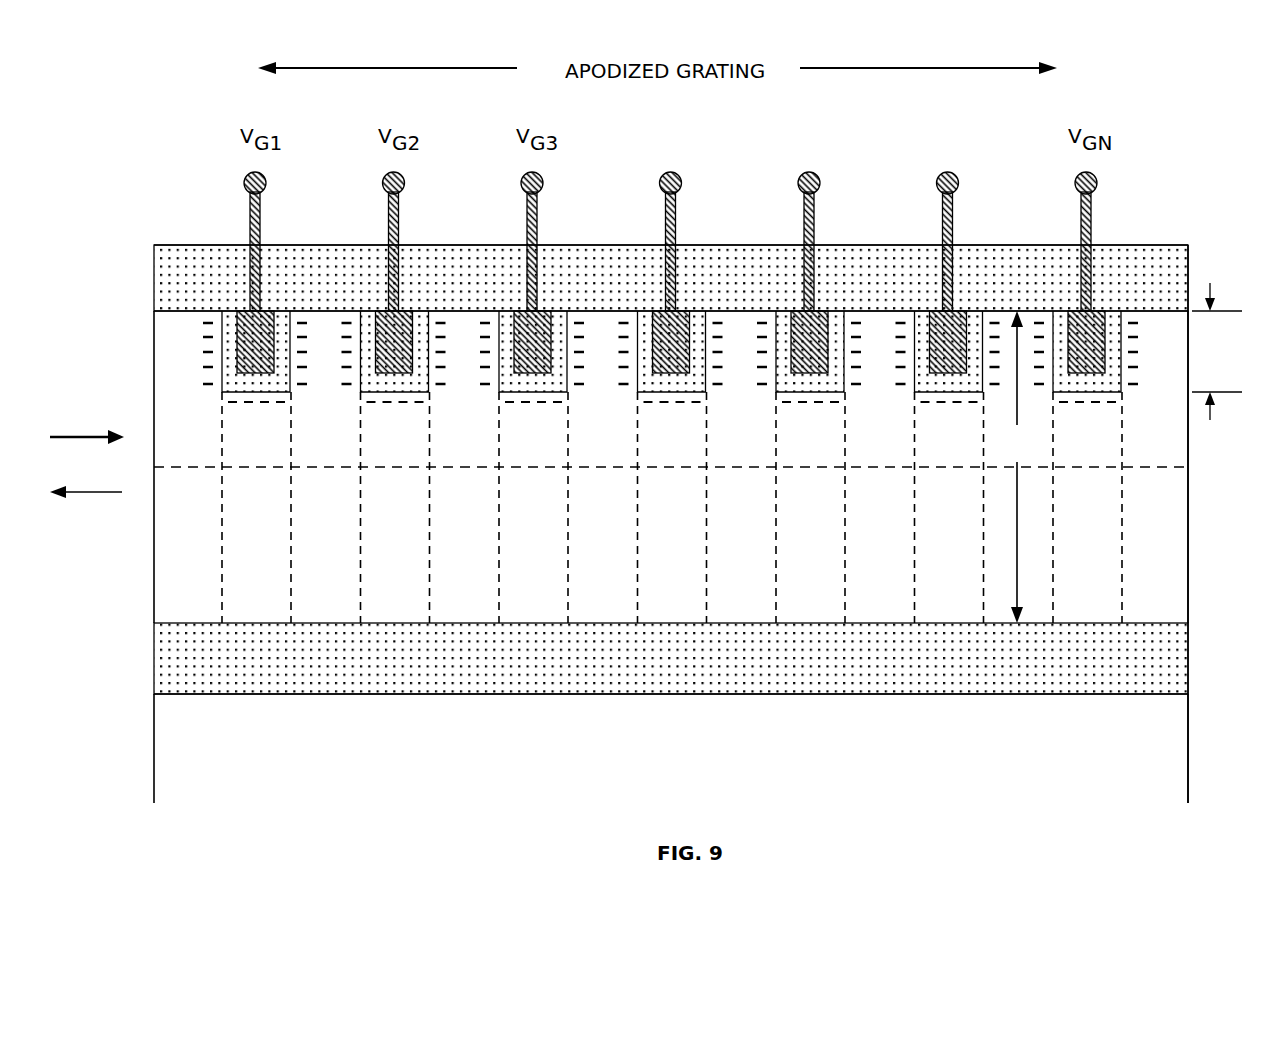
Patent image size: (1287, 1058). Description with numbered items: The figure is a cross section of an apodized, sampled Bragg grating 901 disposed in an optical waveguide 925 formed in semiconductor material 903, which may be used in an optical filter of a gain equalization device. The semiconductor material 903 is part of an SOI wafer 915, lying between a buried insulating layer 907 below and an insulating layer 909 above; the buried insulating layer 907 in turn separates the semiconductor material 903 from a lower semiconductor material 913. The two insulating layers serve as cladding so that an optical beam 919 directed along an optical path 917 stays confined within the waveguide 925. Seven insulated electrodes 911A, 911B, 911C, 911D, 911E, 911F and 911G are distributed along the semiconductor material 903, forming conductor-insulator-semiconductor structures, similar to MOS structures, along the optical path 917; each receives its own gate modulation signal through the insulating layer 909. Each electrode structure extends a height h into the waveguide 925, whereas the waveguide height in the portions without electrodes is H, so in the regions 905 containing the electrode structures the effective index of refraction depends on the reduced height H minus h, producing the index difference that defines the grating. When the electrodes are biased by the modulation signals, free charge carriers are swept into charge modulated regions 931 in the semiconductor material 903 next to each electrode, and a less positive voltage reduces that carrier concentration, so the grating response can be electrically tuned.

The Bragg grating 901 is at (656, 454).
The semiconductor material 903 is at (1175, 575).
The regions of waveguide including insulated electrode structures 905 is at (672, 467).
The buried insulating layer 907 is at (154, 663).
The insulating layer 909 is at (154, 283).
The insulated electrode 911A is at (247, 309).
The insulated electrode 911B is at (386, 309).
The insulated electrode 911C is at (524, 309).
The insulated electrode 911D is at (662, 309).
The insulated electrode 911E is at (801, 309).
The insulated electrode 911F is at (940, 309).
The insulated electrode 911G is at (1078, 309).
The semiconductor material 913 is at (1175, 757).
The SOI wafer 915 is at (1186, 230).
The optical path 917 is at (1177, 463).
The optical beam 919 is at (87, 436).
The optical waveguide 925 is at (1208, 538).
The charge modulated regions 931 is at (208, 392).